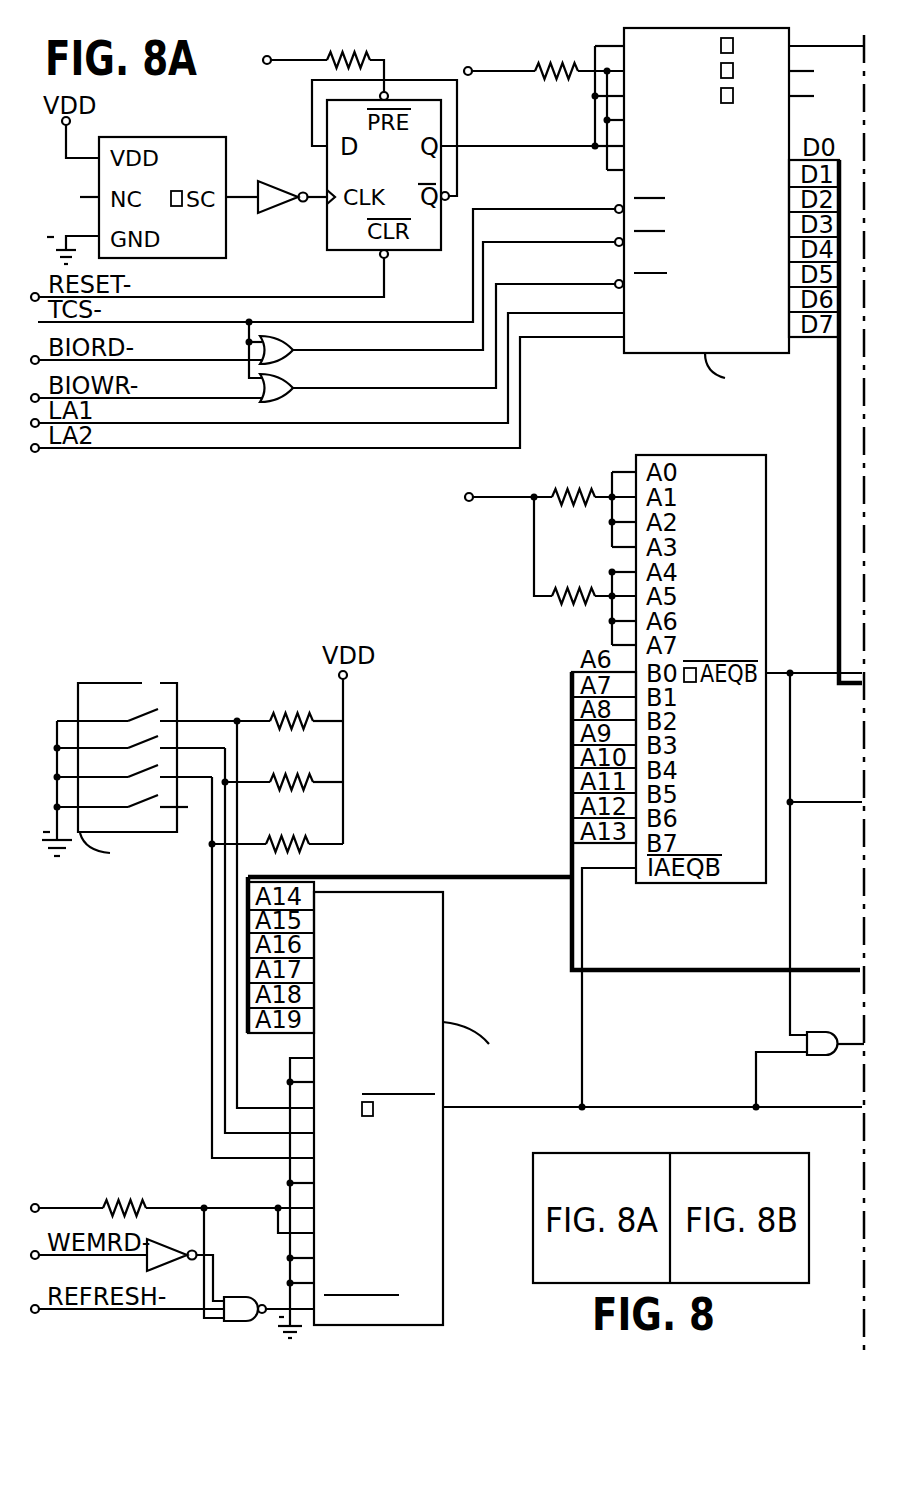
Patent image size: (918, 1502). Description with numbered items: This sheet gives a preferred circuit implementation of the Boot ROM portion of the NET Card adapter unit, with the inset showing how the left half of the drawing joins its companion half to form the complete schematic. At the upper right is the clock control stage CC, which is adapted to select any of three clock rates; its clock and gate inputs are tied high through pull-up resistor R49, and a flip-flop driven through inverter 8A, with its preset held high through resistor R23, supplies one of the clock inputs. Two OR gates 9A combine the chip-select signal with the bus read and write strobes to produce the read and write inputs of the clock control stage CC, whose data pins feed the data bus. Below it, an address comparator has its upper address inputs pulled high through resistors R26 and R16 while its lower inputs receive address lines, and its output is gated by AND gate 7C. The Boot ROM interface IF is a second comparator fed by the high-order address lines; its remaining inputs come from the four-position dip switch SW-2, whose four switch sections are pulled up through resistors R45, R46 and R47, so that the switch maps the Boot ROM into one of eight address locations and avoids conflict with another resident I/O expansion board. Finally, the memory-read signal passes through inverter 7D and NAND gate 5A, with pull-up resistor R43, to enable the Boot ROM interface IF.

The inverter 8A is at (283, 188).
The OR gates 9A is at (294, 362).
The AND gate 7C is at (835, 1031).
The inverter 7D is at (185, 1258).
The NAND gate 5A is at (269, 1296).
The clock control stage CC is at (706, 211).
The Boot ROM interface IF is at (423, 1108).
The four-position dip switch SW-2 is at (139, 775).
The resistor R23 is at (344, 61).
The resistor R49 is at (544, 54).
The resistor R26 is at (550, 479).
The resistor R16 is at (585, 550).
The resistor R45 is at (289, 704).
The resistor R46 is at (283, 765).
The resistor R47 is at (276, 826).
The resistor R43 is at (172, 1191).